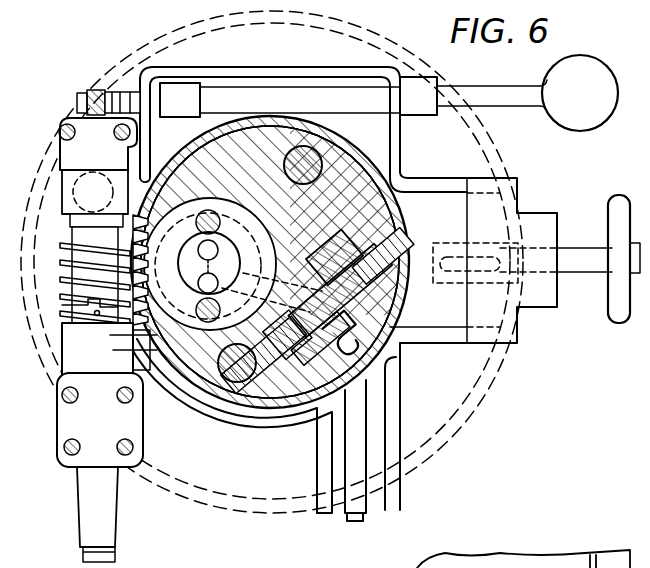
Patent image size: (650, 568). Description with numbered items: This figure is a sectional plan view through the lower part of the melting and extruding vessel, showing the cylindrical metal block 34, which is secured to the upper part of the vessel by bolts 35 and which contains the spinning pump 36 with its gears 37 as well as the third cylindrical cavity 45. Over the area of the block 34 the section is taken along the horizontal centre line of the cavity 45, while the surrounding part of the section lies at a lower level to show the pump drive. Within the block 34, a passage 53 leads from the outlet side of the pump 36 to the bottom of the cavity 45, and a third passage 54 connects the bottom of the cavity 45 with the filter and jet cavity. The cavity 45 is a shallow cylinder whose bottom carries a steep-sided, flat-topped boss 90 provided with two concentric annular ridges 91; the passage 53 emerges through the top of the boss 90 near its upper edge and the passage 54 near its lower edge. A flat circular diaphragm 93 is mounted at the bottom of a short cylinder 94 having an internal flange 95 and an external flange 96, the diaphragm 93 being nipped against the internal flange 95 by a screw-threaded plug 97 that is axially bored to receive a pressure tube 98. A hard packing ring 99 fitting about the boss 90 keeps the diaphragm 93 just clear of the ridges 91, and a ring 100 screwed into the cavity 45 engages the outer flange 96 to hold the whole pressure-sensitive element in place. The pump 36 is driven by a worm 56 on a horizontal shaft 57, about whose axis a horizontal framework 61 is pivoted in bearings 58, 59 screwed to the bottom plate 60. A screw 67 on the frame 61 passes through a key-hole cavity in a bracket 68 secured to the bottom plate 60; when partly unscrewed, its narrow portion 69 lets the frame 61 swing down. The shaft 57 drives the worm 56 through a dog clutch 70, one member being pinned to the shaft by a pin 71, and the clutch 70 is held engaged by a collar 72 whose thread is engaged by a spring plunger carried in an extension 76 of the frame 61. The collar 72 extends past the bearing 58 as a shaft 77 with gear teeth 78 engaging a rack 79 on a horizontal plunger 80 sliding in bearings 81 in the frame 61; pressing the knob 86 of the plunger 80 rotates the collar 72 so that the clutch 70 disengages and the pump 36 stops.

The cylindrical metal block 34 is at (353, 173).
The bolts 35 is at (302, 150).
The spinning pump 36 is at (250, 245).
The gears 37 is at (190, 245).
The third cylindrical cavity 45 is at (346, 334).
The passage 53 is at (330, 185).
The third passage 54 is at (393, 172).
The worm 56 is at (73, 248).
The horizontal shaft 57 is at (82, 552).
The bearing 58 is at (60, 137).
The bearing 59 is at (70, 432).
The bottom plate 60 is at (50, 392).
The horizontal framework 61 is at (174, 77).
The screw 67 is at (580, 254).
The bracket 68 is at (505, 182).
The narrow portion 69 is at (503, 263).
The dog clutch 70 is at (80, 304).
The pin 71 is at (95, 314).
The collar 72 is at (72, 228).
The extension 76 is at (62, 189).
The shaft 77 is at (80, 90).
The gear teeth 78 is at (95, 100).
The rack 79 is at (120, 92).
The horizontal plunger 80 is at (244, 100).
The bearings 81 is at (200, 100).
The knob 86 is at (558, 77).
The boss 90 is at (305, 250).
The annular ridges 91 is at (320, 338).
The diaphragm 93 is at (334, 257).
The short cylinder 94 is at (383, 255).
The internal flange 95 is at (287, 334).
The external flange 96 is at (264, 355).
The screw-threaded plug 97 is at (340, 290).
The pressure tube 98 is at (358, 452).
The hard packing ring 99 is at (207, 332).
The ring 100 is at (390, 257).